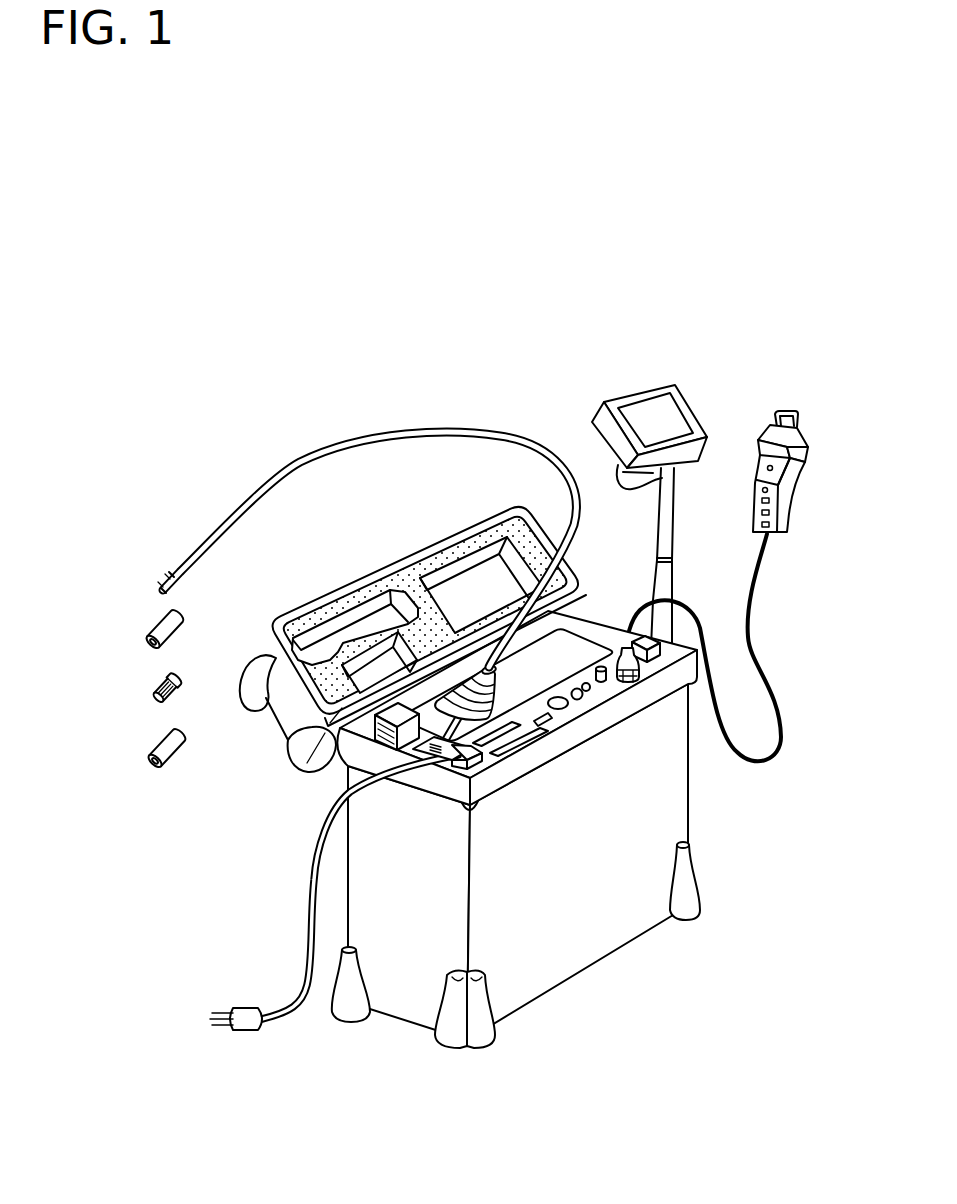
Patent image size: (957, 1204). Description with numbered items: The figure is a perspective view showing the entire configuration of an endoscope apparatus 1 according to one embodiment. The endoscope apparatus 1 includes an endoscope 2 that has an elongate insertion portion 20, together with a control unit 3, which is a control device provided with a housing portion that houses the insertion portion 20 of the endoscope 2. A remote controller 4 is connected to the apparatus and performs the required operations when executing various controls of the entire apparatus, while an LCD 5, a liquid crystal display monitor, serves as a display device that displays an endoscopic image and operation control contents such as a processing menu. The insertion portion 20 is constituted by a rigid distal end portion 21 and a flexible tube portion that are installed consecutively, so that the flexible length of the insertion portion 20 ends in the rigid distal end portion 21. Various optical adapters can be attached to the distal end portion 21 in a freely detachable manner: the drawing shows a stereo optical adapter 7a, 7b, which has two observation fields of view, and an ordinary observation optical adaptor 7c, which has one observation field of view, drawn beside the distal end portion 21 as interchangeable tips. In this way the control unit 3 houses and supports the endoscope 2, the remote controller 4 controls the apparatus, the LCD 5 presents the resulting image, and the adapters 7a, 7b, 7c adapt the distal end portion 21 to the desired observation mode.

The endoscope apparatus 1 is at (443, 340).
The endoscope 2 is at (407, 461).
The control unit 3 is at (639, 891).
The remote controller 4 is at (792, 393).
The LCD 5 is at (643, 373).
The stereo optical adapter 7a is at (150, 755).
The stereo optical adapter 7b is at (152, 693).
The ordinary observation optical adaptor 7c is at (150, 622).
The insertion portion 20 is at (269, 463).
The distal end portion 21 is at (166, 574).